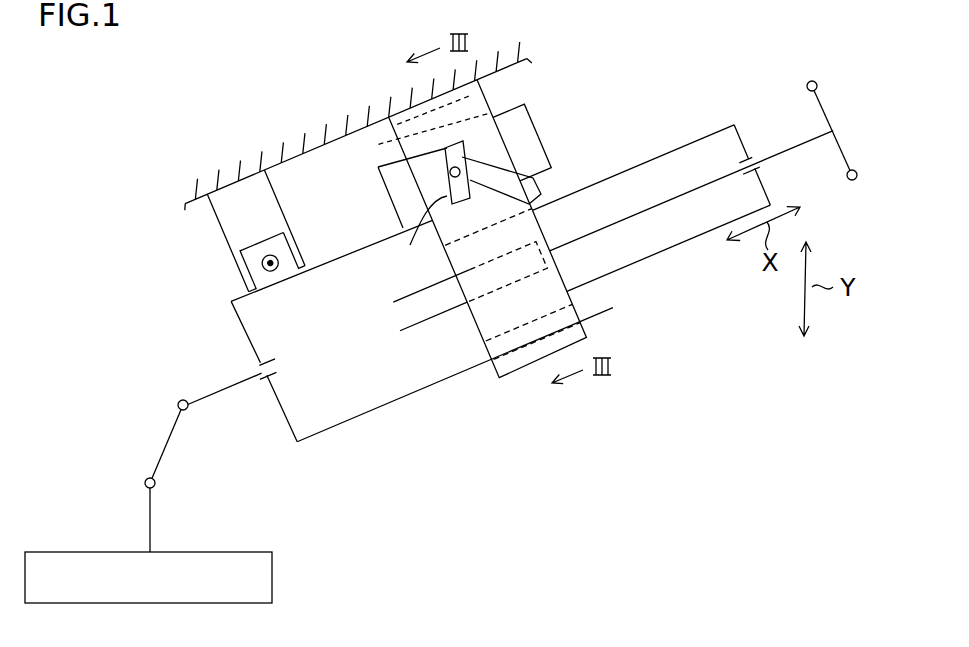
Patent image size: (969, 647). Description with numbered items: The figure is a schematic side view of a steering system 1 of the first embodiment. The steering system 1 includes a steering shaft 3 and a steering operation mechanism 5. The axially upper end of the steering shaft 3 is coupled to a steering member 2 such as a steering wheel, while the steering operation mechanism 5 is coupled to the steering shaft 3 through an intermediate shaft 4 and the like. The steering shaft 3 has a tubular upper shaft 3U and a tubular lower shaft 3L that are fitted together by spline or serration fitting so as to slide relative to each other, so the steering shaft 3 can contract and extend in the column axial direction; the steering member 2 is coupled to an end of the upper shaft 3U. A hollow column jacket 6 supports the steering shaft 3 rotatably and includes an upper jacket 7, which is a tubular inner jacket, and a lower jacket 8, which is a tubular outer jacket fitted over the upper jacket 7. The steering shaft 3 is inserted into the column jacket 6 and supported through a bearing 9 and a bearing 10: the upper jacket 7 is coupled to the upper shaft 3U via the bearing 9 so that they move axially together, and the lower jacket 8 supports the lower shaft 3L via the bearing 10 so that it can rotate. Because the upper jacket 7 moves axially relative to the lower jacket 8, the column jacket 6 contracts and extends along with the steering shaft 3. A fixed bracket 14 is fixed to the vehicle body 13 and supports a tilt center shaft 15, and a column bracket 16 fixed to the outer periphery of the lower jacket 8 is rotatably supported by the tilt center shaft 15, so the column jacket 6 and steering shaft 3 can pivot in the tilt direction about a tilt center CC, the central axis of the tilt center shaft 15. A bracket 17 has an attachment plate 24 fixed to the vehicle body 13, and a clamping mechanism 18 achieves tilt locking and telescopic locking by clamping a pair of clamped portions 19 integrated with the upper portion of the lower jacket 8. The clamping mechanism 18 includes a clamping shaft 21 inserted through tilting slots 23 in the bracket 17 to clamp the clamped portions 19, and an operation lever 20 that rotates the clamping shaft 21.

The steering system 1 is at (742, 57).
The steering member 2 is at (827, 108).
The steering shaft 3 is at (792, 137).
The upper shaft 3U is at (700, 187).
The lower shaft 3L is at (362, 335).
The intermediate shaft 4 is at (167, 440).
The steering operation mechanism 5 is at (272, 578).
The column jacket 6 is at (700, 246).
The upper jacket 7 is at (647, 259).
The lower jacket 8 is at (357, 415).
The bearing 9 is at (748, 158).
The bearing 10 is at (259, 365).
The vehicle body 13 is at (320, 147).
The fixed bracket 14 is at (265, 208).
The tilt center shaft 15 is at (262, 242).
The column bracket 16 is at (290, 262).
The bracket 17 is at (496, 97).
The clamping mechanism 18 is at (533, 148).
The clamped portions 19 is at (514, 132).
The operation lever 20 is at (533, 178).
The clamping shaft 21 is at (443, 173).
The tilting slots 23 is at (394, 270).
The attachment plate 24 is at (417, 128).
The tilt center CC is at (262, 265).